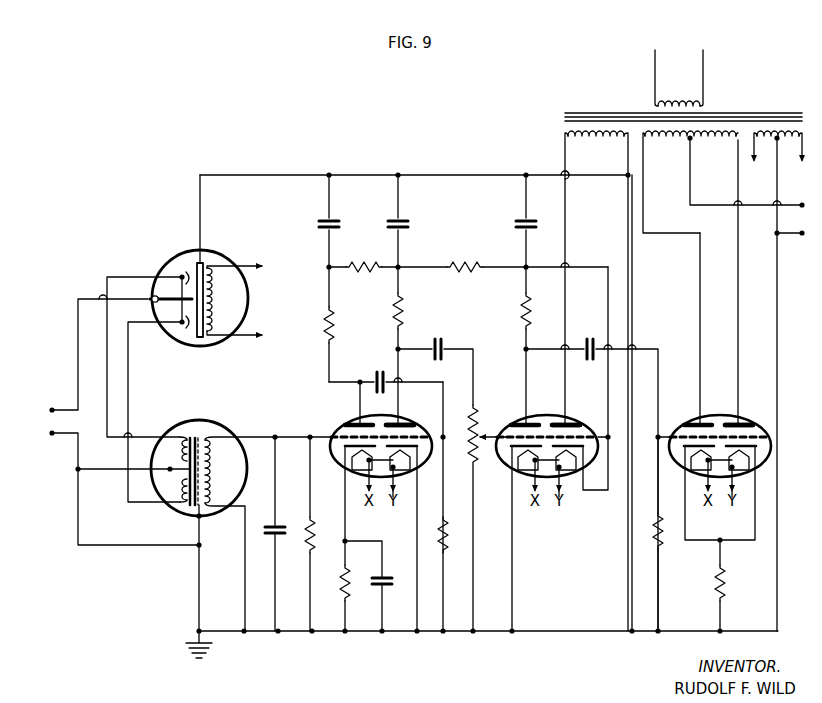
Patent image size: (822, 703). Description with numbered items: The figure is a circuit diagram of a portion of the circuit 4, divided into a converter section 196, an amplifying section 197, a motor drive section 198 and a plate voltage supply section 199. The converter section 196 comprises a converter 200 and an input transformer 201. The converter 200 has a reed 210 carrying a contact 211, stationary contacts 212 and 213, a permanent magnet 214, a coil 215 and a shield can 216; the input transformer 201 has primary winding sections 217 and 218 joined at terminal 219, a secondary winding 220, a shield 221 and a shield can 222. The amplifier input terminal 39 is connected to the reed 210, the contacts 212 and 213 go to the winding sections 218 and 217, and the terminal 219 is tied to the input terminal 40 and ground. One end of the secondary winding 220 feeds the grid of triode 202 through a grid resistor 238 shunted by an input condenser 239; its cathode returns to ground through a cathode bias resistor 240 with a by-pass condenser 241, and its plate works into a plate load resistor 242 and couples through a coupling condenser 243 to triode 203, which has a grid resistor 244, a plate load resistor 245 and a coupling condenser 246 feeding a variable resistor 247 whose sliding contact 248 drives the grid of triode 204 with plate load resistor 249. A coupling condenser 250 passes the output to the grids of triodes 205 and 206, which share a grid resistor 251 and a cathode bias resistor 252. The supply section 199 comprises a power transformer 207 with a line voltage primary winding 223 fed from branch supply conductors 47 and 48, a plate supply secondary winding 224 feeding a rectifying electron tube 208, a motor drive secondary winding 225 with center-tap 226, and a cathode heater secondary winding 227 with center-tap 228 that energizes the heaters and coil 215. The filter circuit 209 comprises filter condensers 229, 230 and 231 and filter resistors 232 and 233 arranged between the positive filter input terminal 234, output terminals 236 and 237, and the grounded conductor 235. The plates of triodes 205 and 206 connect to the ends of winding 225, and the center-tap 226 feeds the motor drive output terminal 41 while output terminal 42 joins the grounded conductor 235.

The circuit 4 is at (198, 106).
The amplifier input terminal 39 is at (52, 410).
The input terminal 40 is at (56, 436).
The motor drive circuit output terminal 41 is at (802, 207).
The motor drive circuit output terminal 42 is at (802, 235).
The branch supply conductor 47 is at (655, 72).
The branch supply conductor 48 is at (703, 72).
The converter section 196 is at (74, 548).
The amplifying section 197 is at (304, 400).
The motor drive section 198 is at (608, 550).
The plate voltage supply section 199 is at (500, 154).
The converter 200 is at (156, 258).
The input transformer 201 is at (226, 416).
The triode electron tube 202 is at (320, 419).
The triode electron tube 203 is at (435, 409).
The triode electron tube 204 is at (483, 420).
The triode electron tube 205 is at (667, 420).
The triode electron tube 206 is at (769, 409).
The power transformer 207 is at (772, 108).
The rectifying electron tube 208 is at (600, 409).
The filter circuit 209 is at (268, 228).
The reed 210 is at (150, 297).
The contact 211 is at (176, 302).
The stationary contact 212 is at (175, 328).
The stationary contact 213 is at (173, 290).
The permanent magnet 214 is at (204, 262).
The coil 215 is at (215, 309).
The shield can 216 is at (208, 346).
The primary winding section 217 is at (177, 439).
The primary winding section 218 is at (177, 508).
The terminal 219 is at (167, 467).
The secondary winding 220 is at (267, 534).
The shield 221 is at (202, 432).
The shield can 222 is at (192, 516).
The line voltage primary winding 223 is at (663, 107).
The plate supply secondary winding 224 is at (590, 144).
The motor drive secondary winding 225 is at (684, 145).
The center-tap 226 is at (696, 145).
The cathode heater secondary winding 227 is at (770, 147).
The center-tap 228 is at (782, 148).
The filter condenser 229 is at (524, 219).
The filter condenser 230 is at (397, 219).
The filter condenser 231 is at (325, 219).
The filter resistor 232 is at (468, 262).
The filter resistor 233 is at (362, 262).
The positive filter input terminal 234 is at (526, 266).
The grounded conductor 235 is at (437, 176).
The positive filter output terminal 236 is at (400, 269).
The positive filter output terminal 237 is at (327, 266).
The grid resistor 238 is at (310, 526).
The input condenser 239 is at (276, 527).
The cathode bias resistor 240 is at (346, 568).
The by-pass condenser 241 is at (385, 576).
The plate load resistor 242 is at (333, 323).
The coupling condenser 243 is at (374, 379).
The grid resistor 244 is at (448, 531).
The plate load resistor 245 is at (401, 313).
The coupling condenser 246 is at (447, 346).
The variable resistor 247 is at (473, 404).
The sliding contact 248 is at (480, 448).
The plate load resistor 249 is at (525, 313).
The coupling condenser 250 is at (604, 344).
The grid resistor 251 is at (661, 539).
The cathode bias resistor 252 is at (723, 583).